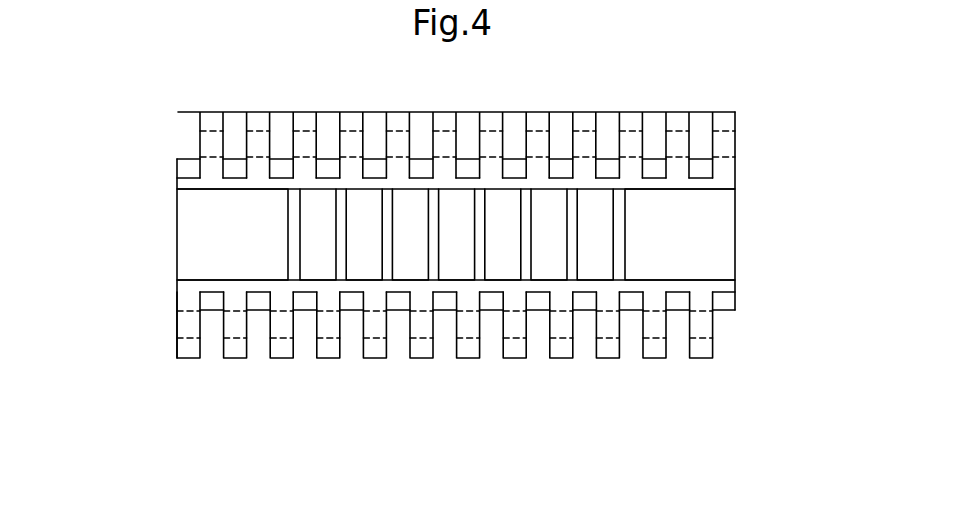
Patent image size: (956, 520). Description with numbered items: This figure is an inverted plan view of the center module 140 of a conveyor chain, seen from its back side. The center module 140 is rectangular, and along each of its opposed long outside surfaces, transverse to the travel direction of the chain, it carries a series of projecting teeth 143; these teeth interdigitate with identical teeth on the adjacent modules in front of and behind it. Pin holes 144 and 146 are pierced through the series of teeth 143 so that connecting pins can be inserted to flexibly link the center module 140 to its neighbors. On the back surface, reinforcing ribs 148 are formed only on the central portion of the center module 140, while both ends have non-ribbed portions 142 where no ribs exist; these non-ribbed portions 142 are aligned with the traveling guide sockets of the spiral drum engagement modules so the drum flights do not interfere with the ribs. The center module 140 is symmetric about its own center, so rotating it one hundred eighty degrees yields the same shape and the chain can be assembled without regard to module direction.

The center module 140 is at (450, 296).
The non-ribbed portions 142 is at (200, 233).
The series of teeth 143 is at (703, 358).
The pin hole 144 is at (699, 338).
The pin hole 146 is at (212, 132).
The reinforcing ribs 148 is at (388, 240).